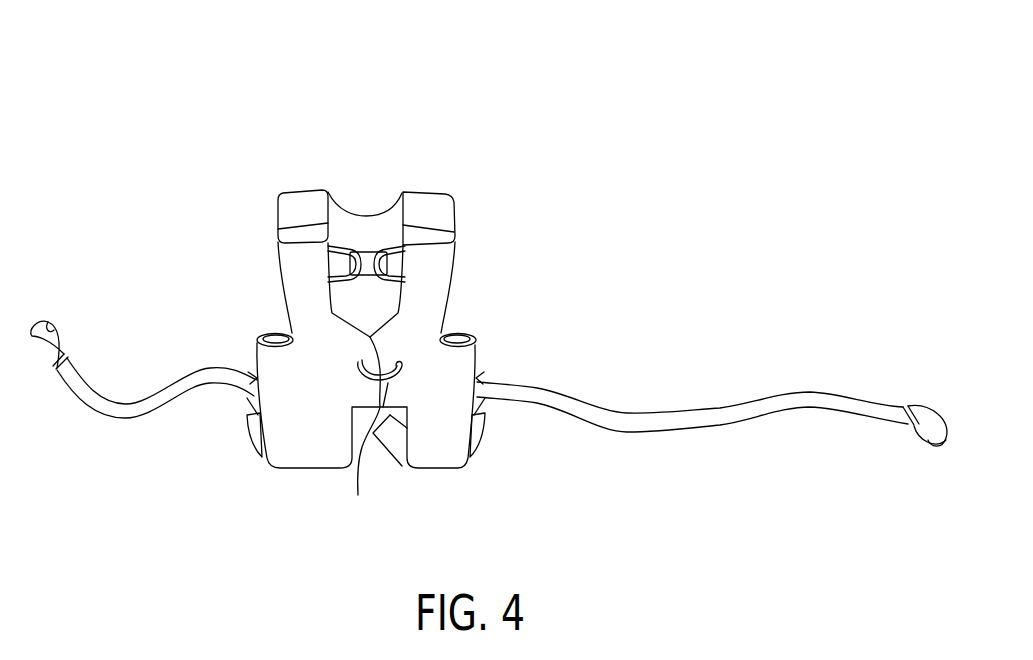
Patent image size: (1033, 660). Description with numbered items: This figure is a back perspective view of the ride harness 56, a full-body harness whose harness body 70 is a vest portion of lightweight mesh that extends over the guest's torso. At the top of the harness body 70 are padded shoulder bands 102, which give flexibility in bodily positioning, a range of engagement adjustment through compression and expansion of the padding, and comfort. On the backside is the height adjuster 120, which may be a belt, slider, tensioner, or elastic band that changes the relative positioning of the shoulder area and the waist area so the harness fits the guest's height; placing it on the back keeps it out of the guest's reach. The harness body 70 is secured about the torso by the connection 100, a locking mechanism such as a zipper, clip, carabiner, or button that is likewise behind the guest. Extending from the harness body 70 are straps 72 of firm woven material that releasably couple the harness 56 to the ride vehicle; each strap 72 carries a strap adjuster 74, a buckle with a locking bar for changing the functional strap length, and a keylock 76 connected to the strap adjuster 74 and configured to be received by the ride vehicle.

The ride harness 56 is at (492, 145).
The harness body 70 is at (463, 363).
The strap 72 is at (153, 420).
The strap adjuster 74 is at (67, 360).
The keylock 76 is at (66, 342).
The connection 100 is at (352, 279).
The shoulder band 102 is at (318, 198).
The height adjuster 120 is at (277, 228).